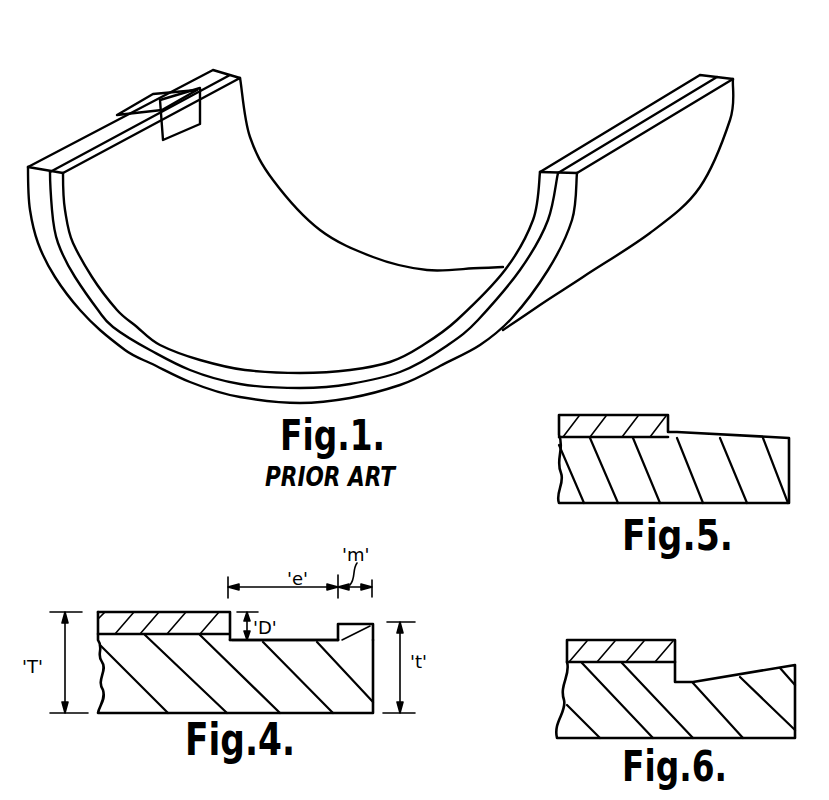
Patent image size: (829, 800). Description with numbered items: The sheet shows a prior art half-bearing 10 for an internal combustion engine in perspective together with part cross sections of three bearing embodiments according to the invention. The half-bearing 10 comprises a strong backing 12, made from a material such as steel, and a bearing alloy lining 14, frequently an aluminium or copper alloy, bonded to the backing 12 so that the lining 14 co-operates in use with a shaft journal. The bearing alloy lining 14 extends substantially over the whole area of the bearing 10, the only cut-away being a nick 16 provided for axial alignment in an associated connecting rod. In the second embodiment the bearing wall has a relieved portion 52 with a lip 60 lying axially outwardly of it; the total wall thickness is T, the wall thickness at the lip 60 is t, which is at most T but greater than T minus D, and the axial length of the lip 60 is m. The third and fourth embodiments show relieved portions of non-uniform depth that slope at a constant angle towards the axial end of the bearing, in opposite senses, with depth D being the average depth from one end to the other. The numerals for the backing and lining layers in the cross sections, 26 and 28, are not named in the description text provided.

In FIG. 1, the half-bearing 10 is at (547, 92).
In FIG. 1, the strong backing 12 is at (677, 187).
In FIG. 1, the bearing alloy lining 14 is at (125, 312).
In FIG. 1, the nick 16 is at (175, 120).
In FIG. 4, the backing layer 26 is at (146, 697).
In FIG. 4, the bearing lining layer 28 is at (143, 630).
In FIG. 4, the relieved portion 52 is at (307, 638).
In FIG. 4, the lip 60 is at (373, 623).